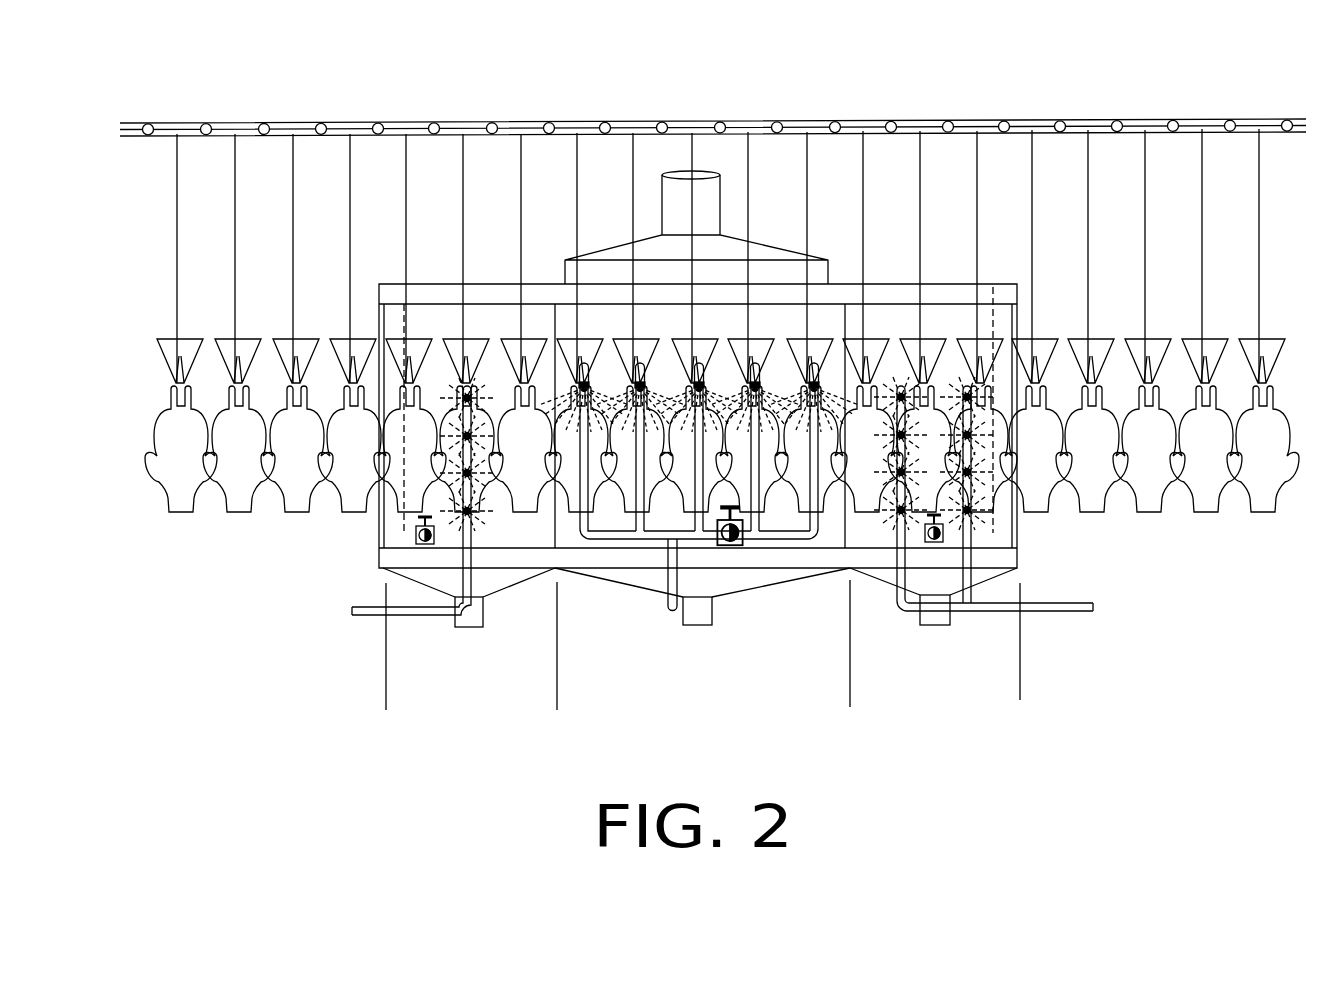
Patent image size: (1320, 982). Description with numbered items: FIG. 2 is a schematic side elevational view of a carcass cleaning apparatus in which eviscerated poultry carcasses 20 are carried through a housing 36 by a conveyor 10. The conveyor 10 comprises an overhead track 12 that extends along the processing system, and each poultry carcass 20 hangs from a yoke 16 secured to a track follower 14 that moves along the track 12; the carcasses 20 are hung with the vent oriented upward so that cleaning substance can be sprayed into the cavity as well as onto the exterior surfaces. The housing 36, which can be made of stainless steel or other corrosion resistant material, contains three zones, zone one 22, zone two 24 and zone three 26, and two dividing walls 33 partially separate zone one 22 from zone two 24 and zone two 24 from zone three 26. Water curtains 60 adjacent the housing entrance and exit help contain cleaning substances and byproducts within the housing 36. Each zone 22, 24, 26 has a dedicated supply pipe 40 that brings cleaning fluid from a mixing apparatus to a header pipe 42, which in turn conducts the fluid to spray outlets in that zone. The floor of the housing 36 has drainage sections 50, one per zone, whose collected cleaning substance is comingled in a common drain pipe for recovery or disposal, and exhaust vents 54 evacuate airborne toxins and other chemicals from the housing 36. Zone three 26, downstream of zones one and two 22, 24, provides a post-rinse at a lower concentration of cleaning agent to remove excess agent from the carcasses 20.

The conveyor 10 is at (212, 108).
The track 12 is at (220, 137).
The track follower 14 is at (363, 127).
The yoke 16 is at (163, 356).
The poultry carcass 20 is at (1158, 462).
The zone one 22 is at (935, 643).
The zone two 24 is at (646, 656).
The zone three 26 is at (437, 646).
The dividing wall 33 is at (845, 323).
The housing 36 is at (935, 284).
The supply pipe 40 is at (366, 615).
The header pipe 42 is at (973, 583).
The drainage section 50 is at (785, 580).
The exhaust vent 54 is at (712, 197).
The water curtain 60 is at (1042, 557).